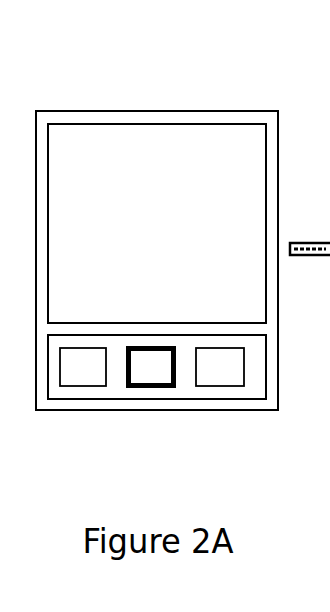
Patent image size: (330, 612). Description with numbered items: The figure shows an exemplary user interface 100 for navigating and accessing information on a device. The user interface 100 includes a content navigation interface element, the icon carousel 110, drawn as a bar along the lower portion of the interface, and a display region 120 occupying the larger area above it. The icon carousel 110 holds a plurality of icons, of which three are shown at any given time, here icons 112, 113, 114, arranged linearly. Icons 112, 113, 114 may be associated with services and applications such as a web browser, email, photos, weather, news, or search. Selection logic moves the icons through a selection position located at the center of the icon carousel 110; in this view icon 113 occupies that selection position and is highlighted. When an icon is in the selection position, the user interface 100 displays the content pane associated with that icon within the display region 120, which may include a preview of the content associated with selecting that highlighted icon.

The user interface 100 is at (139, 110).
The display region 120 is at (221, 143).
The icon carousel 110 is at (270, 363).
The icon 112 is at (80, 387).
The icon 113 is at (152, 389).
The icon 114 is at (220, 387).